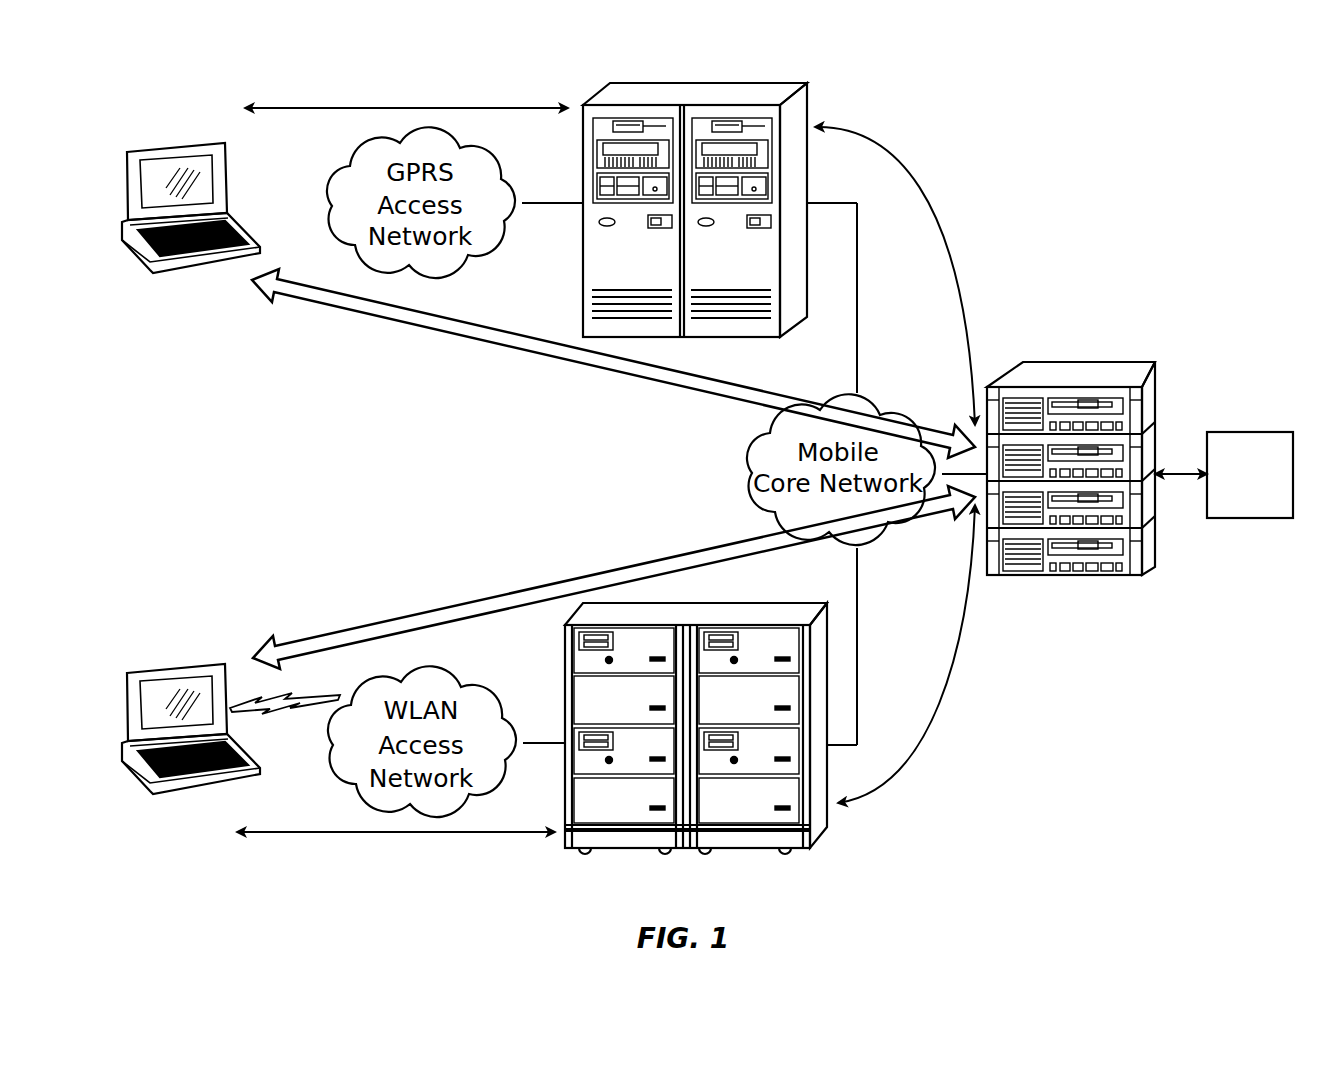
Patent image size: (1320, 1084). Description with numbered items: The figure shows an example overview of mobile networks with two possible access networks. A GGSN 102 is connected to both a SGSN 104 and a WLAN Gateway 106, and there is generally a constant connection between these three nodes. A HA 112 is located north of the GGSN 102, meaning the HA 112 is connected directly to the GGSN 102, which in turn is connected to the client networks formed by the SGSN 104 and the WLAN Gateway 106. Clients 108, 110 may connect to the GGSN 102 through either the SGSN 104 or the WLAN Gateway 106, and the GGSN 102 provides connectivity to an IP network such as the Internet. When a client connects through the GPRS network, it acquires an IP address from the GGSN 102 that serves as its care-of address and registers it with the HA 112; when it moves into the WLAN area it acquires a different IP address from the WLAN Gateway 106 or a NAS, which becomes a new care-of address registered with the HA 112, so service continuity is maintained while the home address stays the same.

The GGSN 102 is at (1082, 352).
The SGSN 104 is at (816, 102).
The WLAN Gateway 106 is at (841, 824).
The client 108 is at (176, 140).
The client 110 is at (176, 803).
The HA 112 is at (1231, 428).